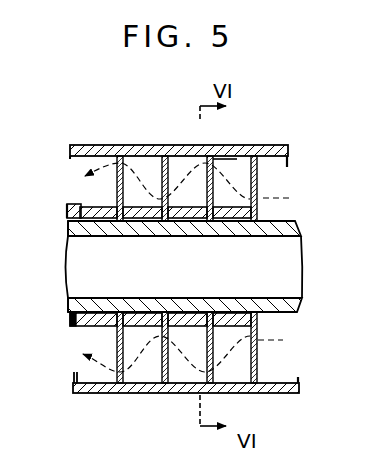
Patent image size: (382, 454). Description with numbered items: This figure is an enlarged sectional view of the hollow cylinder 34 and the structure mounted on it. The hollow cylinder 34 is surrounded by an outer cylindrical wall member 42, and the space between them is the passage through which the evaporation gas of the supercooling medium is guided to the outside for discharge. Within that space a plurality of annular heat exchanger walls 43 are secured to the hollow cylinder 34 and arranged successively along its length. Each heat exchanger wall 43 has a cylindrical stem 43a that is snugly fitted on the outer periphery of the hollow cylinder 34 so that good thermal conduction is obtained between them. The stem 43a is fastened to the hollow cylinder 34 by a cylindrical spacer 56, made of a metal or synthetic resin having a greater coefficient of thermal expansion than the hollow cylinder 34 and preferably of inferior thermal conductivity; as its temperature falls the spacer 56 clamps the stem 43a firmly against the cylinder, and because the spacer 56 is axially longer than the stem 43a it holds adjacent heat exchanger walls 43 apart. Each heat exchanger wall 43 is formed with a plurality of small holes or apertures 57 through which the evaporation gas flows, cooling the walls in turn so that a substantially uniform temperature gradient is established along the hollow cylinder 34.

The outer cylindrical wall member 42 is at (152, 134).
The small holes or apertures 57 is at (237, 158).
The heat exchanger wall 43 is at (260, 177).
The cylindrical stem 43a is at (97, 205).
The cylindrical spacer 56 is at (73, 208).
The hollow cylinder 34 is at (300, 238).